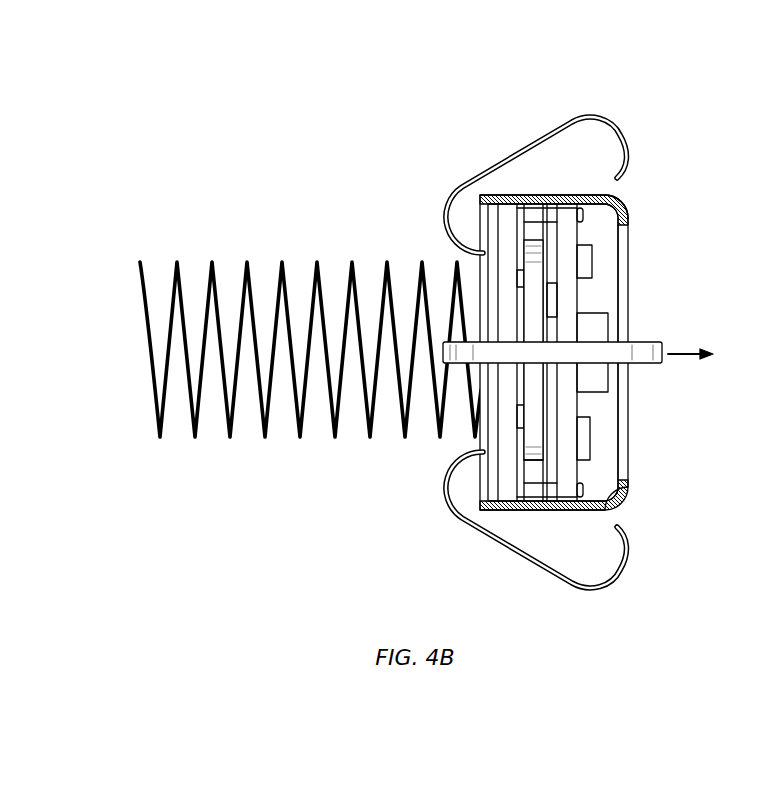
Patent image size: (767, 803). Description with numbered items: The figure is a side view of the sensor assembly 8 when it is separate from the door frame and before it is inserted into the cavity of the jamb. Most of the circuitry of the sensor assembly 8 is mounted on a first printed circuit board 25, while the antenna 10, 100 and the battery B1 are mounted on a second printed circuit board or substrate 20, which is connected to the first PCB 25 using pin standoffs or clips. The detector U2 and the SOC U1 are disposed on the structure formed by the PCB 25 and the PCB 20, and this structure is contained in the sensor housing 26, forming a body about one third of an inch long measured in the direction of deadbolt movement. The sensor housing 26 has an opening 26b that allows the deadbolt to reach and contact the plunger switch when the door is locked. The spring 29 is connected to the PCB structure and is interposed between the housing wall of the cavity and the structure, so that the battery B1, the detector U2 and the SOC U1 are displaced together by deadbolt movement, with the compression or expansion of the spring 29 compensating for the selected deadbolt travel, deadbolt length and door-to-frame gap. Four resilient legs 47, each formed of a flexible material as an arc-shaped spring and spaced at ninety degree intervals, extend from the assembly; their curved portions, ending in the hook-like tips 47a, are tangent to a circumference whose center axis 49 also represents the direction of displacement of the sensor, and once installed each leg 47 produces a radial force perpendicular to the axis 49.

The sensor assembly 8 is at (522, 347).
The spring 29 is at (250, 260).
The resilient leg 47 is at (568, 349).
The hook end of clip 47a is at (580, 116).
The first printed circuit board 25 is at (578, 233).
The detector U2 is at (590, 258).
The SOC U1 is at (558, 293).
The antenna 10 is at (424, 333).
The antenna 100 is at (535, 298).
The center axis 49 is at (687, 362).
The opening 26b is at (625, 442).
The second printed circuit board 20 is at (537, 428).
The battery B1 is at (530, 448).
The sensor housing 26 is at (537, 510).